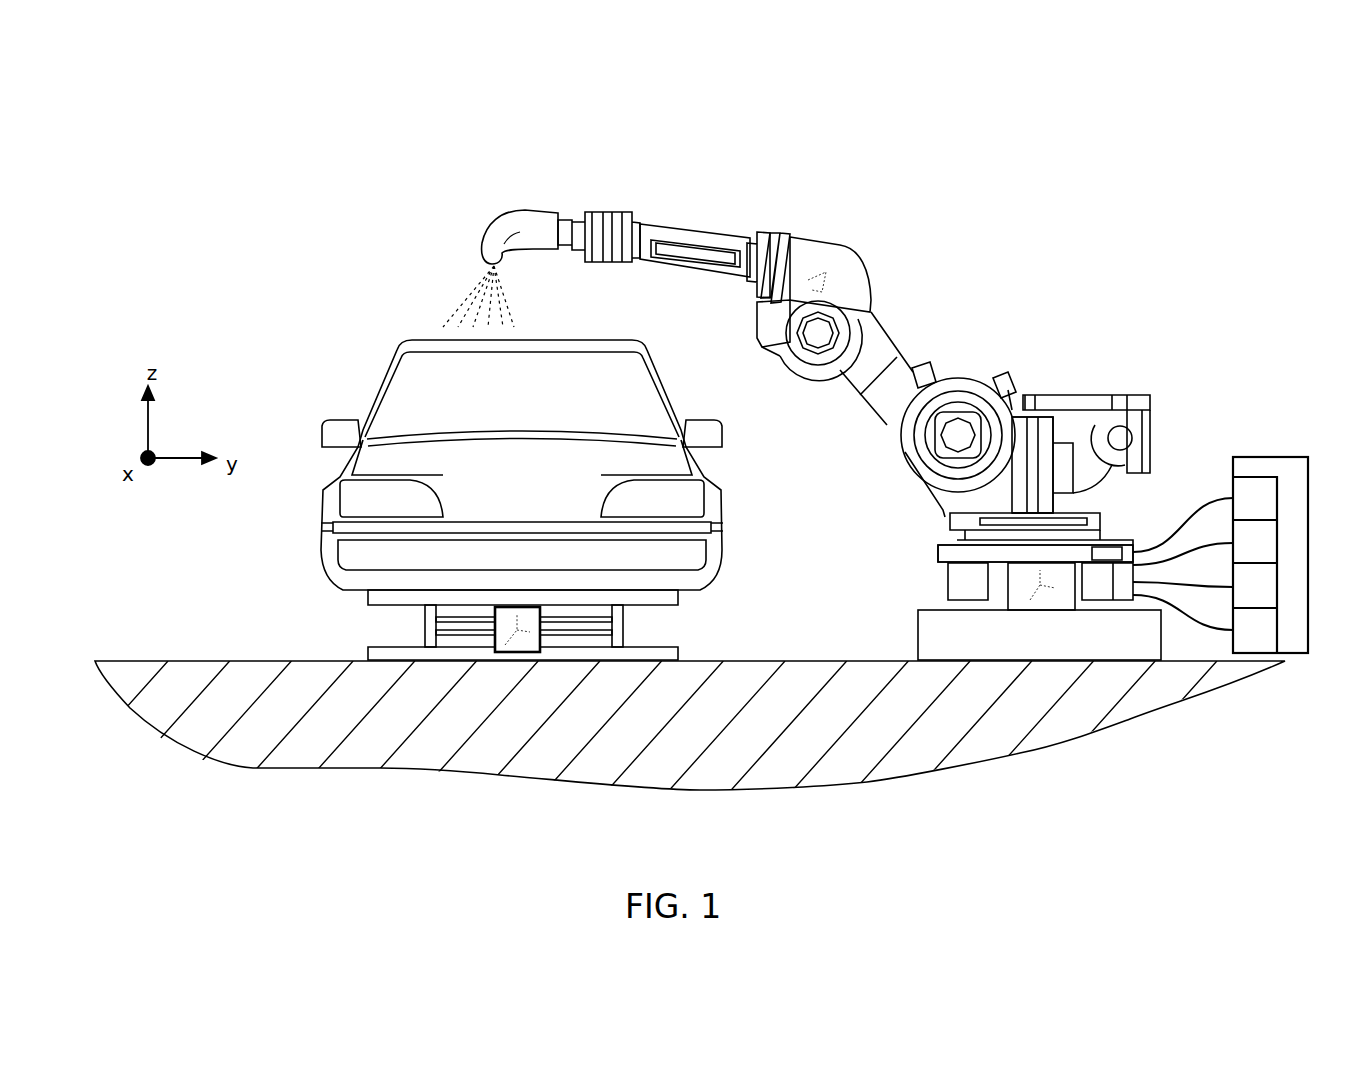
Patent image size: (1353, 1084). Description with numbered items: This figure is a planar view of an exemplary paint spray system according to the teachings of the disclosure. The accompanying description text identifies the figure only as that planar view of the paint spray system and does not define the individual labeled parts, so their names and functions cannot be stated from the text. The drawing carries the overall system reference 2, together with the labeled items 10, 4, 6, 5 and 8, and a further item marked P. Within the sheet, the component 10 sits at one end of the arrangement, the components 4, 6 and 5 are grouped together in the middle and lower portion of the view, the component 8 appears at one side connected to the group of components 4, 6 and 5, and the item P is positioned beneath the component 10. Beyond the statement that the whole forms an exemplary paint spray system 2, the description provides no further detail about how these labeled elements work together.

The painting installation 2 is at (479, 146).
The atomizer / applicator 10 is at (490, 234).
The painting robot 4 is at (858, 263).
The robot arm member 6 is at (1053, 432).
The robot base 5 is at (1107, 515).
The control unit with drive units M1..Mn 8 is at (1280, 457).
The vehicle body (painting object) P is at (522, 500).